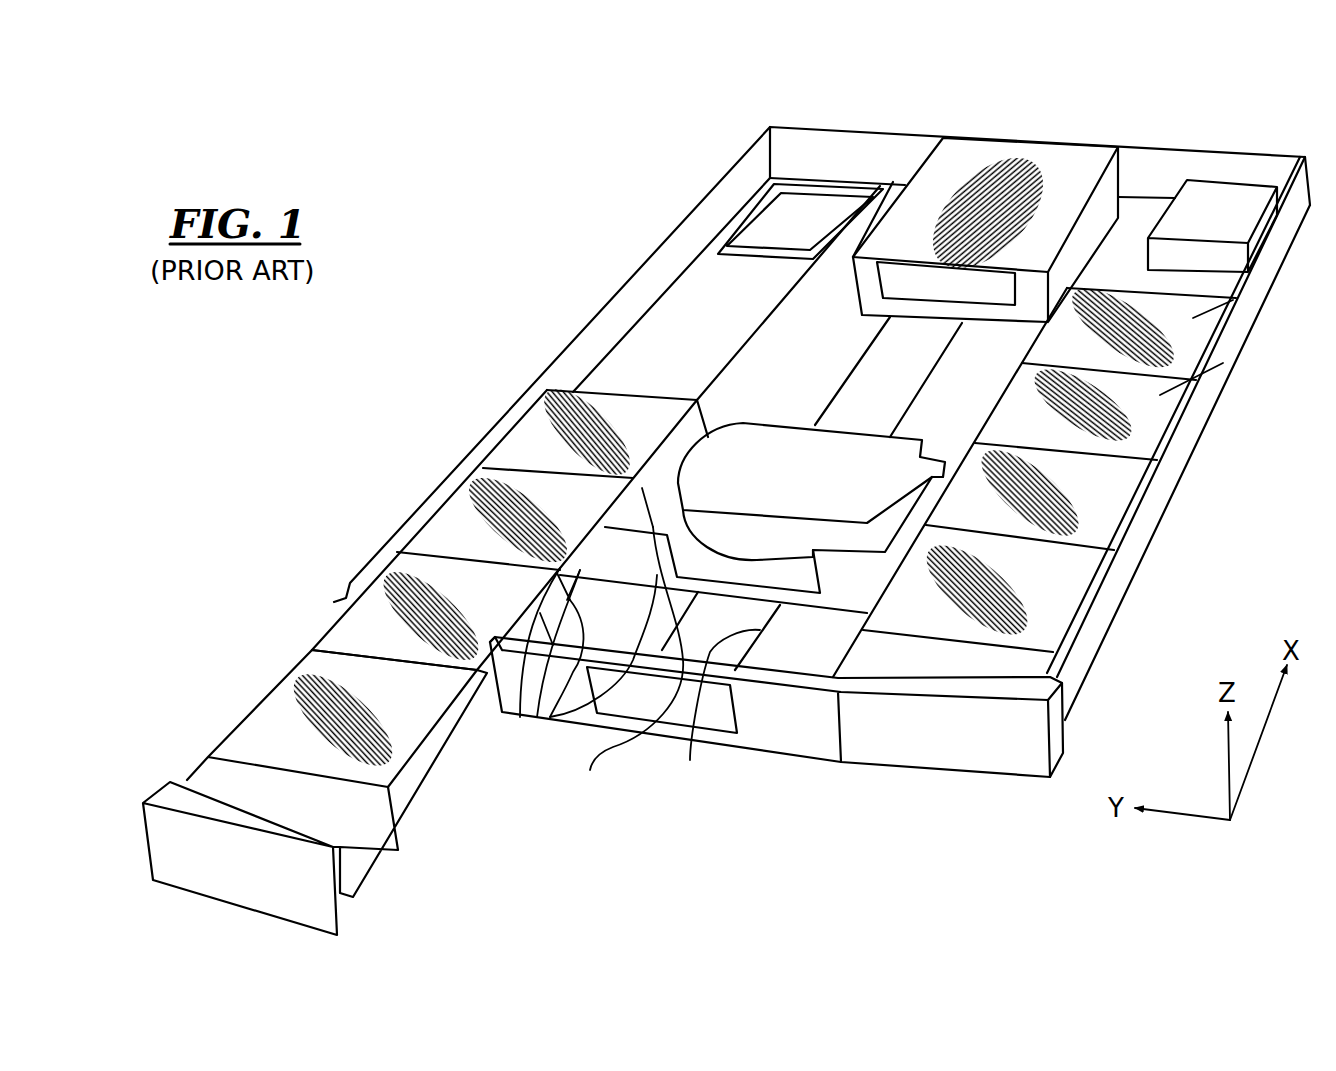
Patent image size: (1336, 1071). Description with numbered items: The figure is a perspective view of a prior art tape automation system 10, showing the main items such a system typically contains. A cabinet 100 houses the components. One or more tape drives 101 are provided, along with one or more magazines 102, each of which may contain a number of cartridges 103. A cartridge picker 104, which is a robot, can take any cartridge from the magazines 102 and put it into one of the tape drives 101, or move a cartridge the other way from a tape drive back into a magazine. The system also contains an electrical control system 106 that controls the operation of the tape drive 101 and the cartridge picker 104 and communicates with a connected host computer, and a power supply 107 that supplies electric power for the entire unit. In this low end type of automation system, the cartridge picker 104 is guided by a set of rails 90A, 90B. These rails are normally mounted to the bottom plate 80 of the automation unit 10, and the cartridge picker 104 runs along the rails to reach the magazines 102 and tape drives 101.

The tape automation system 10 is at (688, 143).
The cabinet 100 is at (638, 278).
The tape drive 101 is at (993, 163).
The magazine 102 is at (348, 634).
The cartridge 103 is at (550, 717).
The cartridge picker 104 is at (773, 457).
The electrical control system 106 is at (800, 207).
The power supply 107 is at (1213, 197).
The bottom plate 80 is at (745, 752).
The rail 90A is at (590, 770).
The rail 90B is at (690, 760).